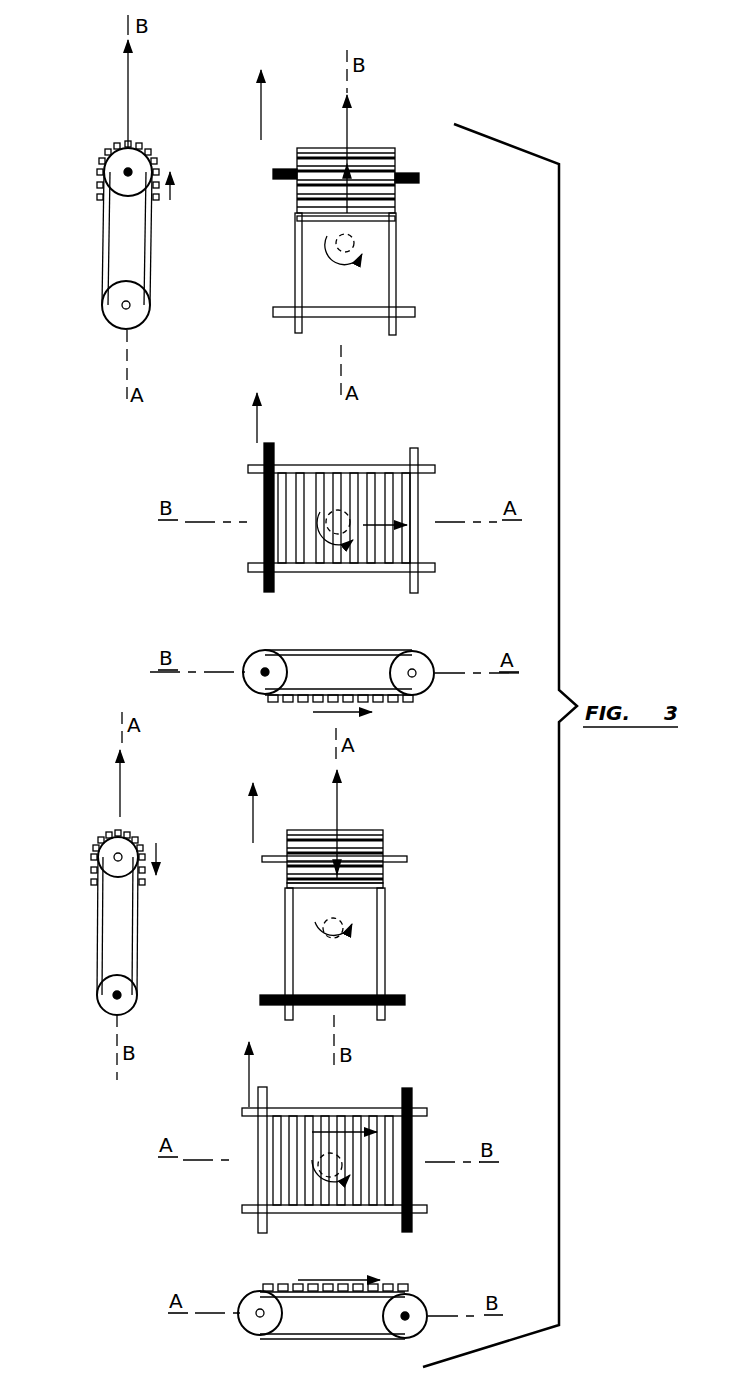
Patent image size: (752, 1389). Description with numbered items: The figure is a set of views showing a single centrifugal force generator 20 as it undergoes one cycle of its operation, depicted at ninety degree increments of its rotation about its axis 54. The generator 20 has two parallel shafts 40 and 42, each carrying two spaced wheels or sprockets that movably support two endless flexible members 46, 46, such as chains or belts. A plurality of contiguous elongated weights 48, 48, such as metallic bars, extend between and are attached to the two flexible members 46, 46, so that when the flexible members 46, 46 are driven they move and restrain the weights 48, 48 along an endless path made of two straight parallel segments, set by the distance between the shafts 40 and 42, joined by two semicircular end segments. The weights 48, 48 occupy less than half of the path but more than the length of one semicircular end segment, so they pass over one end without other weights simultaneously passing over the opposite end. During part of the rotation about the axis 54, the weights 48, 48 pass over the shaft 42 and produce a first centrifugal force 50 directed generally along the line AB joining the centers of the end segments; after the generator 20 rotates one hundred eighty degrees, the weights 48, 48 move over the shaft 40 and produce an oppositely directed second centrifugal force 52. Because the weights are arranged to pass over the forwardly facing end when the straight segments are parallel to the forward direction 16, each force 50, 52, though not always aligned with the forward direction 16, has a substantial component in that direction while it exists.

The forward direction 16 is at (262, 108).
The centrifugal force generator 20 is at (441, 208).
The shaft 40 is at (130, 306).
The shaft 42 is at (134, 172).
The endless flexible member 46 is at (104, 240).
The elongated weight 48 is at (122, 146).
The first centrifugal force 50 is at (128, 88).
The second centrifugal force 52 is at (120, 792).
The axis 54 is at (354, 246).